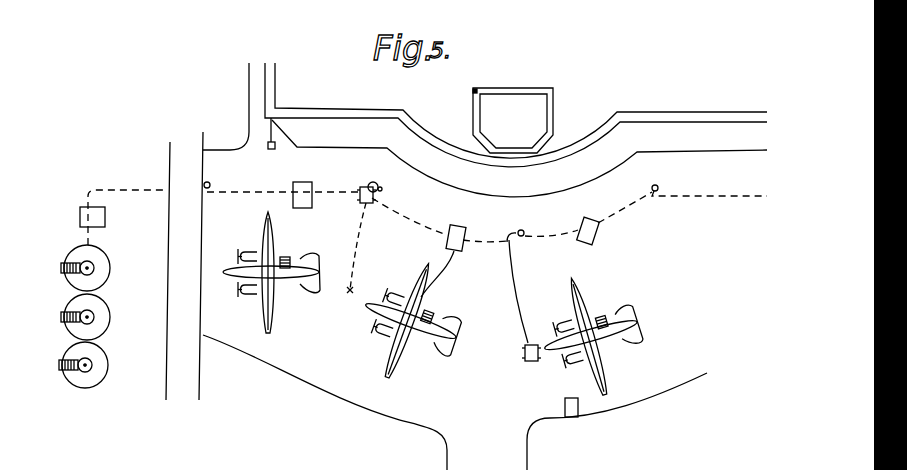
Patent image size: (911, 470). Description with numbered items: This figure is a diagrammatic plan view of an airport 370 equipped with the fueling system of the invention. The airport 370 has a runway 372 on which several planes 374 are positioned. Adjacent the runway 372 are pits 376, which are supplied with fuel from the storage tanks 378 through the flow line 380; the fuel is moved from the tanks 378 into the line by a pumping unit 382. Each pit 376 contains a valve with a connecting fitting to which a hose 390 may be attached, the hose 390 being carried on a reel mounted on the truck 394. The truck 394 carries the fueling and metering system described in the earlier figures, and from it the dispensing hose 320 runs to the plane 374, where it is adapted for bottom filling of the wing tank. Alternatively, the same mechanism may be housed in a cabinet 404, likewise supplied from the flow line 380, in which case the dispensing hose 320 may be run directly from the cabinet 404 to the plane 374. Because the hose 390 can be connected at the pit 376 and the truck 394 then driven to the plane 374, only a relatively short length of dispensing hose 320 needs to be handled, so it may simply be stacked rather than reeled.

The airport 370 is at (555, 100).
The runway 372 is at (650, 390).
The planes 374 is at (272, 330).
The pits 376 is at (383, 190).
The storage tanks 378 is at (102, 300).
The flow line 380 is at (105, 188).
The pumping unit 382 is at (106, 217).
The hose 390 is at (538, 291).
The truck 394 is at (373, 203).
The cabinet 404 is at (305, 182).
The dispensing hose 320 is at (440, 275).